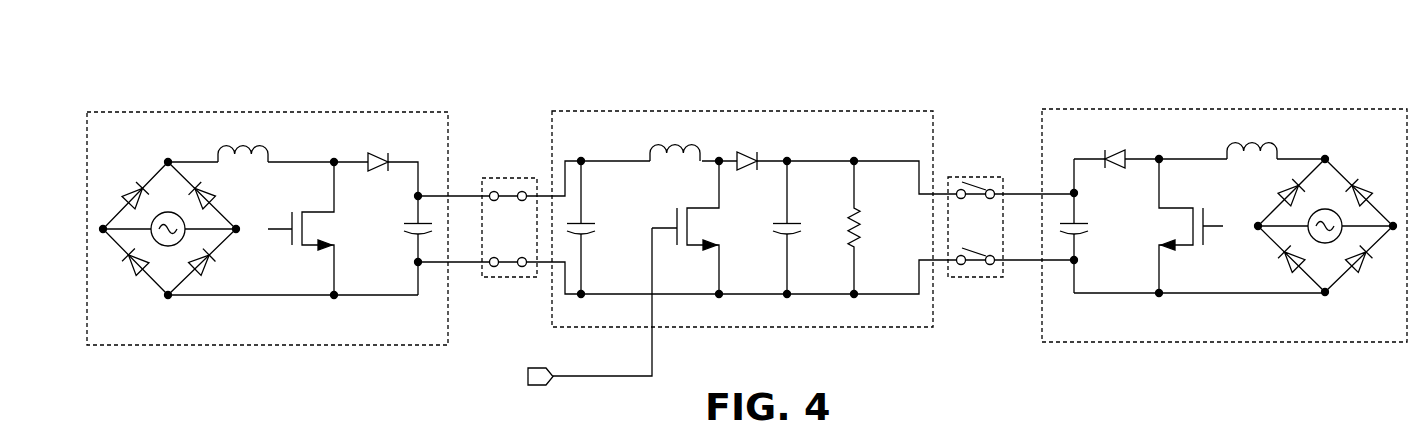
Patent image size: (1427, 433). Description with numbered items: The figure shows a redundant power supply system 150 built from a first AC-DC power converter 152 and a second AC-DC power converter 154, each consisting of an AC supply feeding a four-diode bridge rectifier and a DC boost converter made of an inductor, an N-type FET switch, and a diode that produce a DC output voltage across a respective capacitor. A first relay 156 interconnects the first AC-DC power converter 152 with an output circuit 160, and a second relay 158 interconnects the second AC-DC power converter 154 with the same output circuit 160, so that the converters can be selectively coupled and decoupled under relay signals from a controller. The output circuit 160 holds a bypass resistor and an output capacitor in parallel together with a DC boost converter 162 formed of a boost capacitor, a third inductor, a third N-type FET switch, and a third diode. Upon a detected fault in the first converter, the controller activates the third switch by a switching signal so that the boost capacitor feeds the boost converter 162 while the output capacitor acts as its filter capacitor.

The redundant power supply system 150 is at (195, 80).
The first AC-DC power converter 152 is at (318, 112).
The second AC-DC power converter 154 is at (1250, 109).
The first relay 156 is at (521, 178).
The second relay 158 is at (963, 177).
The output circuit 160 is at (752, 111).
The DC boost converter 162 is at (753, 245).